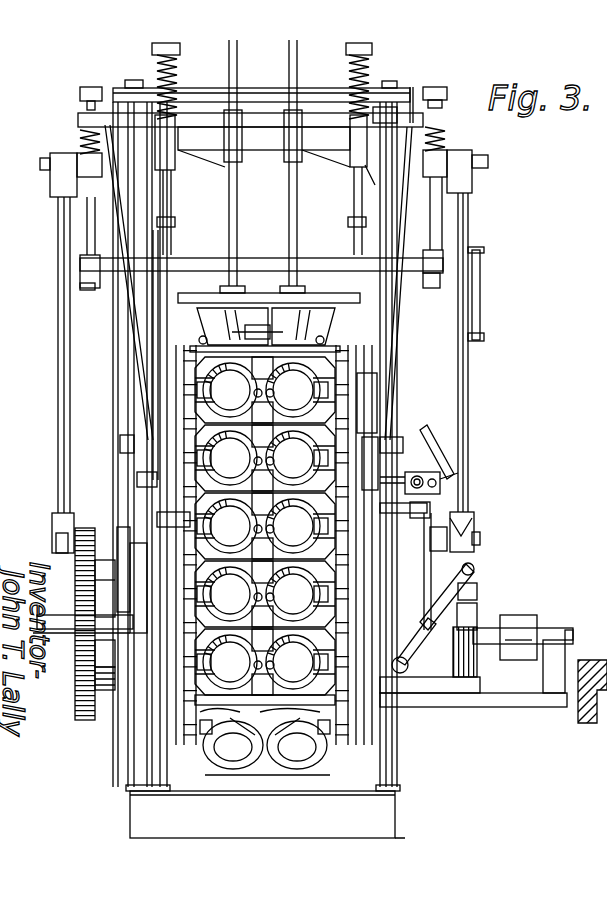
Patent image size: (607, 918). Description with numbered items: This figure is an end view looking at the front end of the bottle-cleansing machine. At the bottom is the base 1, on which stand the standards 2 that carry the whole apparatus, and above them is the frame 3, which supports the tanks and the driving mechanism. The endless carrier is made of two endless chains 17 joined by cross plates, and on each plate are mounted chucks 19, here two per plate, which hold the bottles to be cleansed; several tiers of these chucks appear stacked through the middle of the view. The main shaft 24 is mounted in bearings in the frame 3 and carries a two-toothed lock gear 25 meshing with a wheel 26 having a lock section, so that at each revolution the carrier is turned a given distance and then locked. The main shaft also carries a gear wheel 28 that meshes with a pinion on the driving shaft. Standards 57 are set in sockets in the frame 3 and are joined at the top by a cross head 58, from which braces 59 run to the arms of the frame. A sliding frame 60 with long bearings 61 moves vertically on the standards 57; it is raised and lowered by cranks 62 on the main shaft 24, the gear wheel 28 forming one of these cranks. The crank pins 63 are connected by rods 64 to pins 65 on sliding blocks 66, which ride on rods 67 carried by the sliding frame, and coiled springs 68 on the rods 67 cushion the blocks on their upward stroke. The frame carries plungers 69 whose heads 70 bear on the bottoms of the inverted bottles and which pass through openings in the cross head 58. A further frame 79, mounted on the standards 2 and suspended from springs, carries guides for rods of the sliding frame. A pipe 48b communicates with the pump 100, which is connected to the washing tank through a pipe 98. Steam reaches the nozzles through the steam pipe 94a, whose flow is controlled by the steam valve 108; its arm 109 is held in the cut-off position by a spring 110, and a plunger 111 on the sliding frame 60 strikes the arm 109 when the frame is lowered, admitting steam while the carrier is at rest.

The base 1 is at (398, 806).
The standards 2 is at (168, 281).
The frame 3 is at (418, 660).
The endless chains 17 is at (183, 565).
The chucks 19 is at (206, 318).
The main shaft 24 is at (450, 625).
The lock gear 25 is at (117, 662).
The wheel 26 is at (103, 700).
The gear wheel 28 is at (77, 685).
The pipe 48b is at (473, 673).
The standards 57 is at (118, 450).
The cross head 58 is at (213, 92).
The braces 59 is at (130, 290).
The sliding frame 60 is at (250, 147).
The long bearings 61 is at (130, 221).
The cranks 62 is at (470, 576).
The crank pins 63 is at (52, 540).
The rods 64 is at (58, 210).
The pins 65 is at (40, 165).
The sliding blocks 66 is at (261, 173).
The rods 67 is at (62, 232).
The coiled springs 68 is at (82, 135).
The plungers 69 is at (230, 258).
The heads 70 is at (276, 305).
The frame 79 is at (150, 333).
The steam pipe 94a is at (422, 474).
The pipe 98 is at (430, 510).
The pump 100 is at (460, 668).
The steam valve 108 is at (445, 482).
The arm 109 is at (470, 470).
The spring 110 is at (435, 430).
The plunger 111 is at (484, 290).